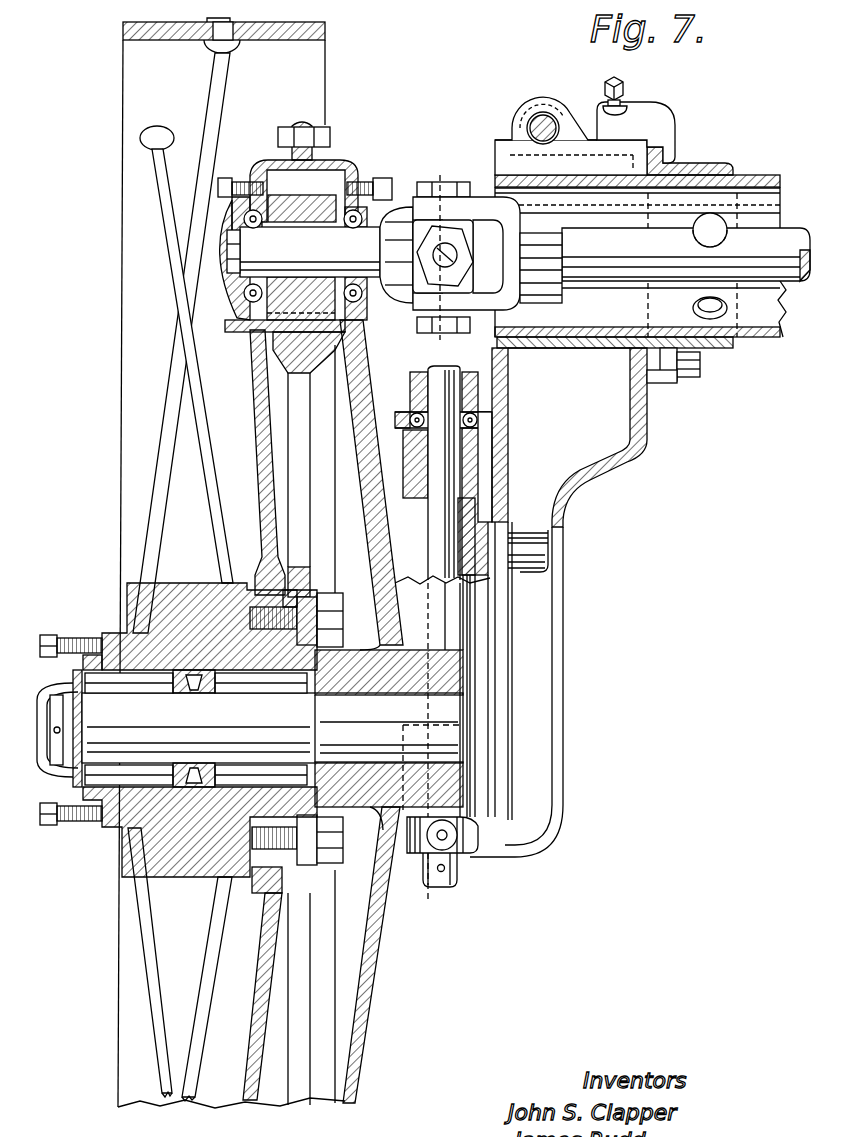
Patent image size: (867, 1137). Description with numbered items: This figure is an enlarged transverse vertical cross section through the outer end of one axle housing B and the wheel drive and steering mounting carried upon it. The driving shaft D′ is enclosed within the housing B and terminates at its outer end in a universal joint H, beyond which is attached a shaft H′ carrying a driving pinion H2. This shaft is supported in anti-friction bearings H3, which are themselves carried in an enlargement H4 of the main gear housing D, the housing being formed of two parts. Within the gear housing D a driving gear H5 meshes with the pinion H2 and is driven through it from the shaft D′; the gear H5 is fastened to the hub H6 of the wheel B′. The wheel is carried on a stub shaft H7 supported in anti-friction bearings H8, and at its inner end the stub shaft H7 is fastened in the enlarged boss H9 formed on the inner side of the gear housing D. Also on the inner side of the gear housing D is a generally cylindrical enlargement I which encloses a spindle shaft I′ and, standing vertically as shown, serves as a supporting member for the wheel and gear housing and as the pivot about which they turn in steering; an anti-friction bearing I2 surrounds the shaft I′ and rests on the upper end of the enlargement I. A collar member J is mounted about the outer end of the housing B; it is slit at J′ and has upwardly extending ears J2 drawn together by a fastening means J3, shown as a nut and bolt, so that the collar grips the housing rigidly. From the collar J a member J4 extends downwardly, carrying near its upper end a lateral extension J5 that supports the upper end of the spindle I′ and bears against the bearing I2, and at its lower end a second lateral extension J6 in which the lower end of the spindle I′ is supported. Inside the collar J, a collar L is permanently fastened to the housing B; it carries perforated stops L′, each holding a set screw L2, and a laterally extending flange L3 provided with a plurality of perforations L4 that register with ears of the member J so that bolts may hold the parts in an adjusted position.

The wheel B′ is at (125, 33).
The enlargement of the gear housing H4 is at (265, 160).
The shaft H′ is at (300, 243).
The driving pinion H2 is at (328, 190).
The anti-friction bearings H3 is at (244, 220).
The gear housing D is at (260, 432).
The driving gear H5 is at (267, 340).
The hub H6 is at (170, 837).
The stub shaft H7 is at (140, 717).
The anti-friction bearings H8 is at (233, 680).
The enlarged boss H9 is at (443, 777).
The lateral extension J5 is at (410, 378).
The anti-friction bearing I2 is at (477, 420).
The spindle shaft I′ is at (445, 522).
The cylindrical enlargement I is at (475, 553).
The collar member J is at (647, 403).
The downwardly extending member J4 is at (550, 655).
The second lateral extension J6 is at (477, 858).
The perforations L4 is at (700, 362).
The laterally extending flange L3 is at (667, 381).
The housing B is at (750, 180).
The collar L is at (700, 167).
The driving shaft D′ is at (790, 240).
The slit J′ is at (613, 153).
The upwardly extending ears J2 is at (541, 97).
The fastening means J3 is at (538, 128).
The stops L′ is at (633, 110).
The set screw L2 is at (603, 108).
The universal joint H is at (440, 222).